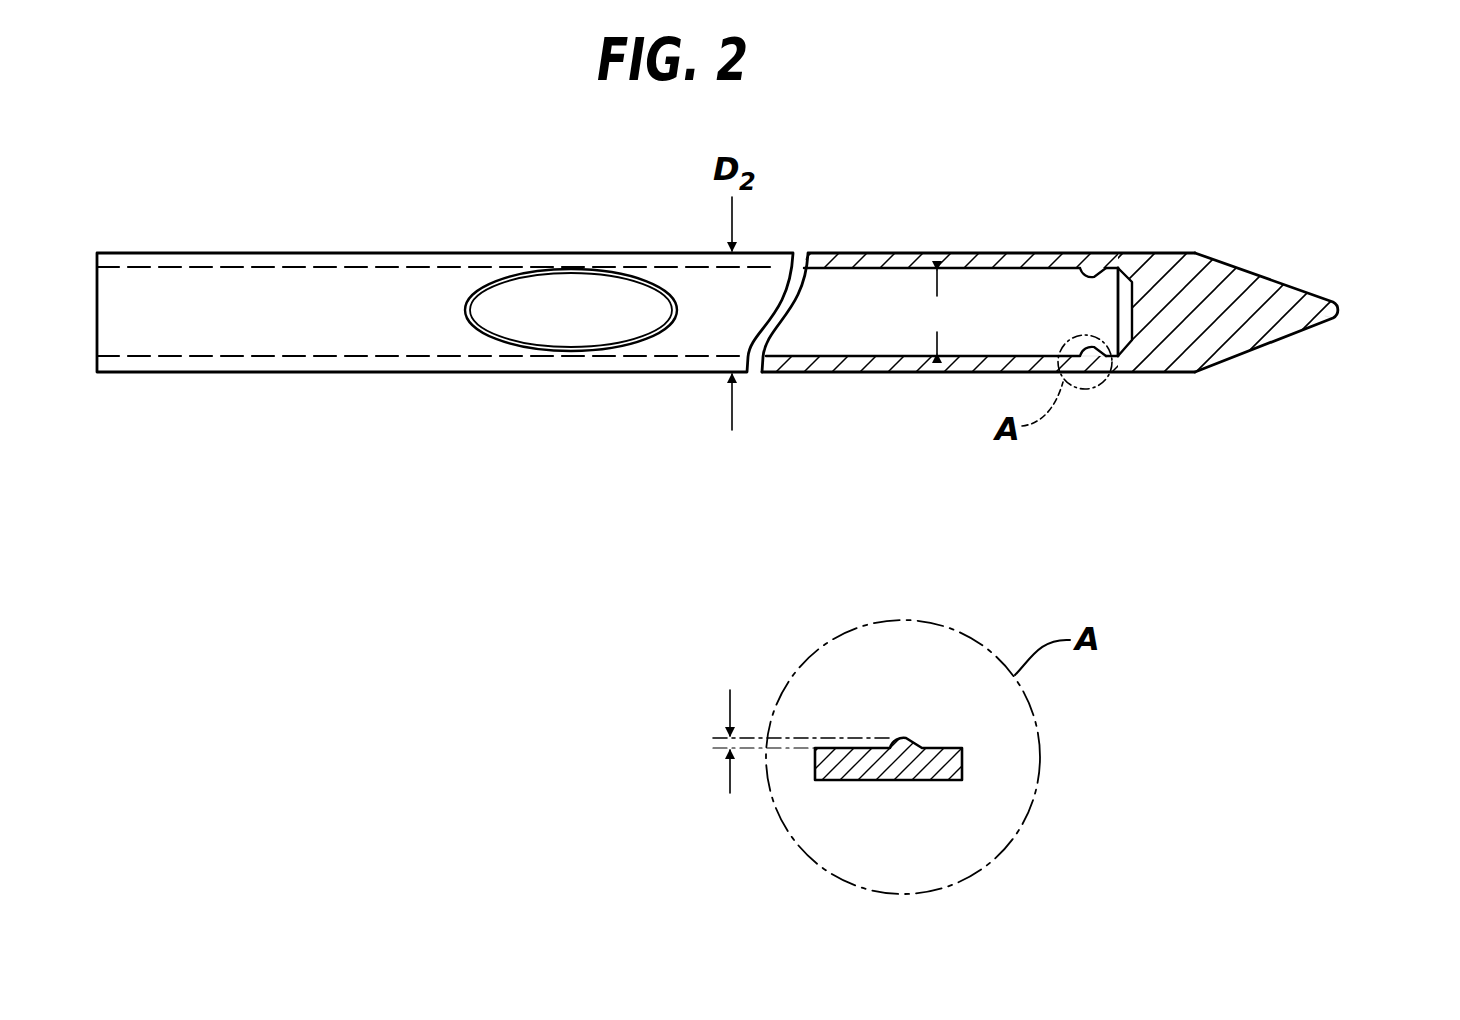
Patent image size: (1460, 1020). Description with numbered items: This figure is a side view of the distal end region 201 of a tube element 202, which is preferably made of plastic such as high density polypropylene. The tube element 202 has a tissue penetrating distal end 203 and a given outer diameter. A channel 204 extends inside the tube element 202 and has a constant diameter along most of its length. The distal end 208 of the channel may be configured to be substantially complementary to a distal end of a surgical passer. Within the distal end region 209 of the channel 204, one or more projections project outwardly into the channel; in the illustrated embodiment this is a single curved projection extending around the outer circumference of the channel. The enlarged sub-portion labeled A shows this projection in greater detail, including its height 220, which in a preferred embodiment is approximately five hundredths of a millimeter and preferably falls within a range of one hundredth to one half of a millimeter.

The distal end region 201 is at (1180, 252).
The tube element 202 is at (1003, 253).
The tissue penetrating distal end 203 is at (1334, 299).
The channel 204 is at (876, 312).
The distal end of the channel 208 is at (1126, 287).
The distal end region of the channel 209 is at (1075, 313).
The height 220 is at (798, 725).